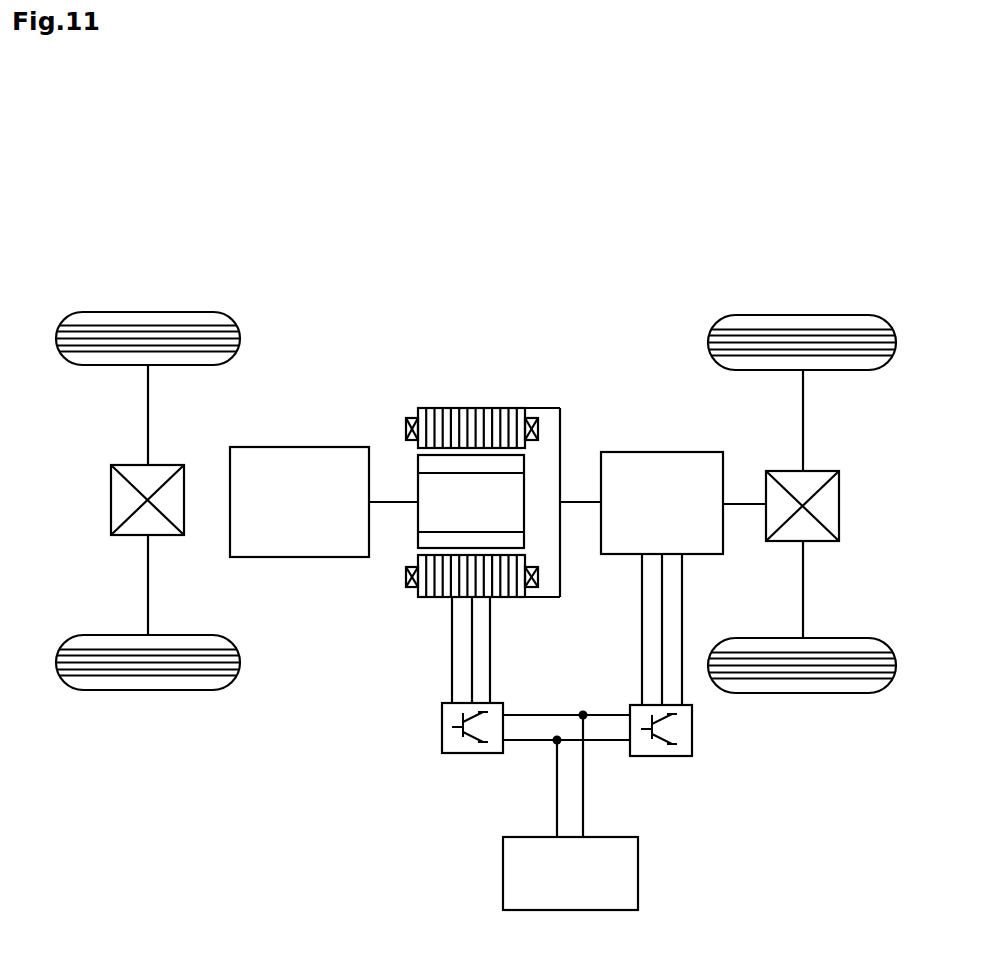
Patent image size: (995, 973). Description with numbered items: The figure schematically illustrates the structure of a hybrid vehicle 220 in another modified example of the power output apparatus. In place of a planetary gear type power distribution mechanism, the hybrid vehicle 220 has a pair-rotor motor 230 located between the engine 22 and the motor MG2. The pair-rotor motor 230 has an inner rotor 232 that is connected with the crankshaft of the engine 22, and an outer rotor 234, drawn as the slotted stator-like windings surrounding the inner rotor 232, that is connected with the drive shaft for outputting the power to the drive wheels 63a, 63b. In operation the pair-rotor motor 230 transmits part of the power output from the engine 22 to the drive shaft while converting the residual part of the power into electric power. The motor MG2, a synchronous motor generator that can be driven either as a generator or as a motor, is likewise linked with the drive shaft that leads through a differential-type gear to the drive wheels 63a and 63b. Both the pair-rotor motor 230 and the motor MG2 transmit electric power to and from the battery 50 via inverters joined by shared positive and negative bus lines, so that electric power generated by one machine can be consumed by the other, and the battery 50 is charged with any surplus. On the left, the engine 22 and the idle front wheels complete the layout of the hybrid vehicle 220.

The engine 22 is at (300, 557).
The hybrid vehicle 220 is at (552, 197).
The pair-rotor motor 230 is at (405, 263).
The inner rotor 232 is at (418, 485).
The outer rotor 234 is at (472, 408).
The motor MG2 is at (663, 452).
The drive wheel 63a is at (803, 315).
The drive wheel 63b is at (803, 693).
The battery 50 is at (638, 869).